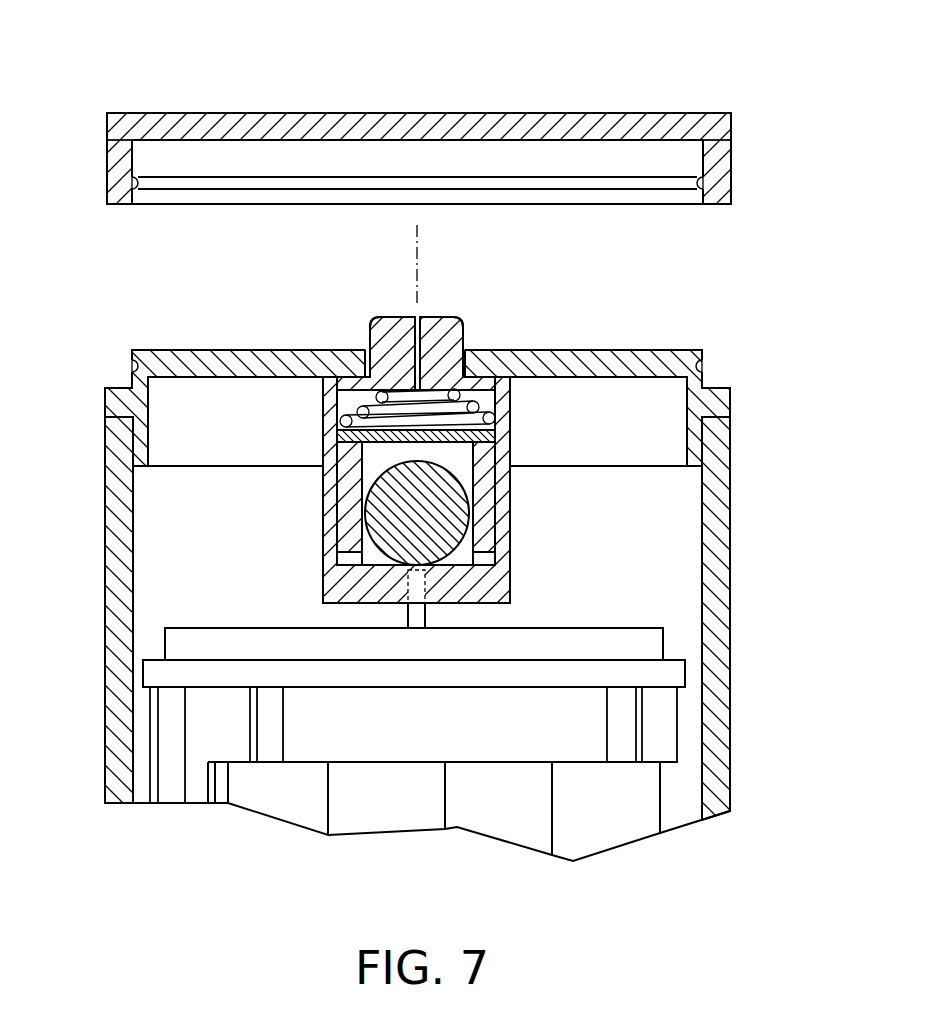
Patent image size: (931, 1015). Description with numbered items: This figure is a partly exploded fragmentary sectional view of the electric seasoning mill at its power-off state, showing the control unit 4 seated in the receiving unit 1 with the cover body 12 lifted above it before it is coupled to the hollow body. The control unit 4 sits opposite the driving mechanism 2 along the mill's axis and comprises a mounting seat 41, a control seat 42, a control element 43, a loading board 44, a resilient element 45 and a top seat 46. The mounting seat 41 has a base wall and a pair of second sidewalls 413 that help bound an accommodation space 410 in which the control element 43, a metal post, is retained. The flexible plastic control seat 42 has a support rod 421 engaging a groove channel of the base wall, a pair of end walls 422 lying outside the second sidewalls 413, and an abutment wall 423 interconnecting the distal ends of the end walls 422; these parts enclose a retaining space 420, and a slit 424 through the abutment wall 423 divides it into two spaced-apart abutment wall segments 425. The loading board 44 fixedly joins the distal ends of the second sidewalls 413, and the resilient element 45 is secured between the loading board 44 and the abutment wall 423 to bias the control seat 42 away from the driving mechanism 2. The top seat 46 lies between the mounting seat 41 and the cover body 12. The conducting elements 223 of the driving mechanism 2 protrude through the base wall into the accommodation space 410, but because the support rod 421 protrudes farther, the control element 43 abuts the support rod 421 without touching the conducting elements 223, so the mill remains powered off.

The receiving unit 1 is at (740, 660).
The driving mechanism 2 is at (667, 805).
The control unit 4 is at (123, 318).
The cover body 12 is at (412, 100).
The mounting seat 41 is at (422, 634).
The accommodation space 410 is at (462, 455).
The second sidewalls 413 is at (352, 517).
The control seat 42 is at (428, 307).
The retaining space 420 is at (495, 393).
The support rod 421 is at (380, 587).
The end walls 422 is at (323, 491).
The abutment wall 423 is at (393, 317).
The slit 424 is at (425, 345).
The abutment wall segments 425 is at (372, 345).
The control element 43 is at (442, 535).
The loading board 44 is at (511, 427).
The resilient element 45 is at (380, 395).
The top seat 46 is at (225, 350).
The conducting elements 223 is at (418, 617).